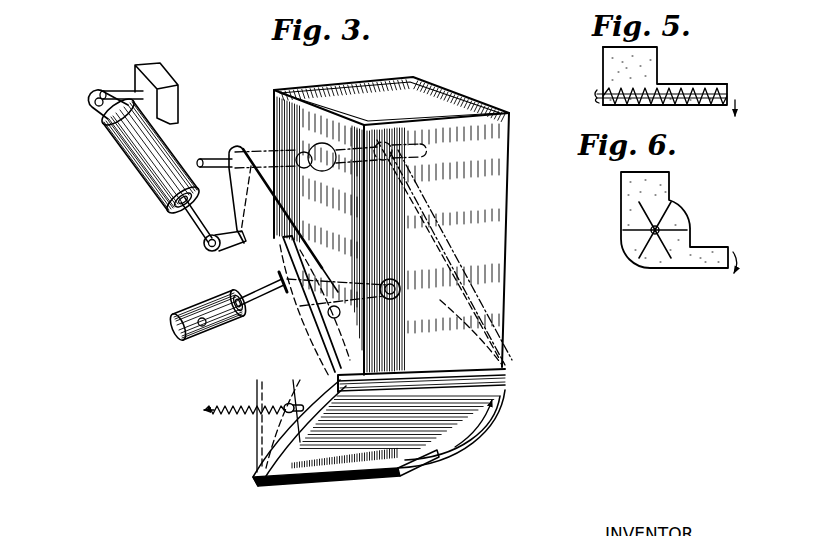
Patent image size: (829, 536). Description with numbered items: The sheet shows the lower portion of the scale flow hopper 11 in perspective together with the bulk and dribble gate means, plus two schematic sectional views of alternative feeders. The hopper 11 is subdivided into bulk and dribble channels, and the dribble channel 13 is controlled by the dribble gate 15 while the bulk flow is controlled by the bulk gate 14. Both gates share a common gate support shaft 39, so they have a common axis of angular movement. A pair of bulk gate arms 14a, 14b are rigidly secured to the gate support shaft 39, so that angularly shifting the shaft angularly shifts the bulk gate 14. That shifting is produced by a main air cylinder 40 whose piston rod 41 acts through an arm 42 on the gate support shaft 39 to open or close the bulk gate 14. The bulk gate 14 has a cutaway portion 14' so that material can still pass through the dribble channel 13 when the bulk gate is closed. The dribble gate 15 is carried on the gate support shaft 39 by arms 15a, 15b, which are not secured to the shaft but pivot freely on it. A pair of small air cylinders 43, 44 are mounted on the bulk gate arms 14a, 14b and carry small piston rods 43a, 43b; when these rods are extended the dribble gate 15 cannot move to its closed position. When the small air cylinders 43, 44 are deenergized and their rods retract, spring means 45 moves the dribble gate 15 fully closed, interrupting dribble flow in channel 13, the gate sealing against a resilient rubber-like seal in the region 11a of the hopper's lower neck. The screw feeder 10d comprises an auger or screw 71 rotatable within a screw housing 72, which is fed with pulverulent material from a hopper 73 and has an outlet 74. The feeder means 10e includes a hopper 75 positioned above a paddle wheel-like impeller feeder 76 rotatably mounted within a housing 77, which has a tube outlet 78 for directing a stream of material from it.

In FIG. 3, the scale flow hopper 11 is at (508, 249).
In FIG. 3, the lower neck region of the scale flow hopper 11a is at (302, 480).
In FIG. 3, the dribble channel 13 is at (360, 478).
In FIG. 3, the bulk gate 14 is at (435, 467).
In FIG. 3, the cutaway portion 14' is at (326, 482).
In FIG. 3, the bulk gate arm 14a is at (250, 250).
In FIG. 3, the bulk gate arm 14b is at (356, 251).
In FIG. 3, the dribble gate 15 is at (473, 433).
In FIG. 3, the dribble gate arm 15a is at (278, 236).
In FIG. 3, the dribble gate arm 15b is at (448, 217).
In FIG. 3, the gate support shaft 39 is at (210, 158).
In FIG. 3, the main air cylinder 40 is at (126, 152).
In FIG. 3, the piston rod 41 is at (200, 232).
In FIG. 3, the arm 42 is at (302, 172).
In FIG. 3, the small air cylinder 43 is at (186, 342).
In FIG. 3, the small piston rod 43a is at (253, 327).
In FIG. 3, the small piston rod 43b is at (455, 256).
In FIG. 3, the small air cylinder 44 is at (349, 299).
In FIG. 3, the spring means 45 is at (237, 418).
In FIG. 5, the screw feeder 10d is at (664, 88).
In FIG. 5, the auger or screw 71 is at (641, 102).
In FIG. 5, the screw housing 72 is at (706, 103).
In FIG. 5, the hopper 73 is at (605, 62).
In FIG. 5, the outlet 74 is at (731, 102).
In FIG. 6, the feeder means 10e is at (661, 236).
In FIG. 6, the hopper 75 is at (622, 191).
In FIG. 6, the paddle wheel-like impeller feeder 76 is at (633, 217).
In FIG. 6, the housing 77 is at (640, 264).
In FIG. 6, the tube outlet 78 is at (713, 266).